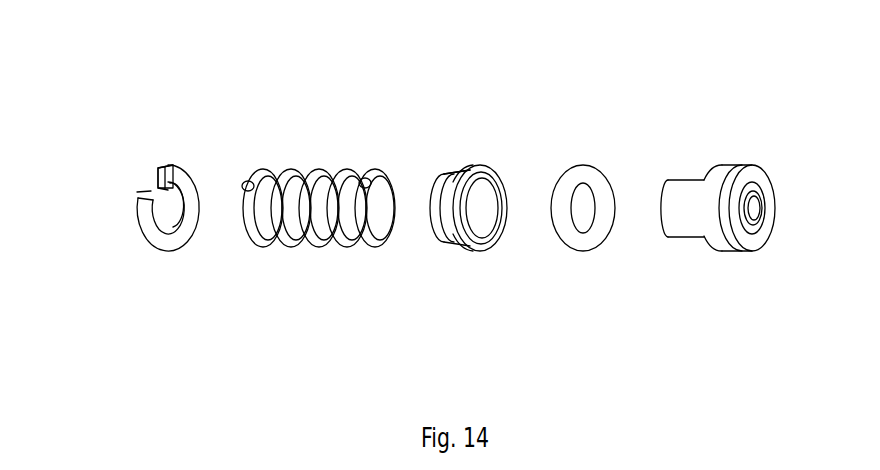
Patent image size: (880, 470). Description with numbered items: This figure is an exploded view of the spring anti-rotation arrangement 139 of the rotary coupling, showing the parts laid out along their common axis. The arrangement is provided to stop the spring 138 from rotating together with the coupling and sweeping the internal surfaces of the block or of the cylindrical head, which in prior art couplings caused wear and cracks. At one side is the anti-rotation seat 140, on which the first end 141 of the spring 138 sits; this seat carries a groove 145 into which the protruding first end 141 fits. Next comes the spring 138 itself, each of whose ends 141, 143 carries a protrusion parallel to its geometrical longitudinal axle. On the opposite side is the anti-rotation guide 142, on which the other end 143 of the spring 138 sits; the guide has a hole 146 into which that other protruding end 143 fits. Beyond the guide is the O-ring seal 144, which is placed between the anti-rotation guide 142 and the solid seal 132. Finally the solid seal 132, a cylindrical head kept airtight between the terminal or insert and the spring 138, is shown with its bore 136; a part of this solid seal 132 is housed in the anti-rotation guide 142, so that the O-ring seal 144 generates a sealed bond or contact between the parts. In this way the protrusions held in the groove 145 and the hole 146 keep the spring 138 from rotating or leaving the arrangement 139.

The solid seal 132 is at (700, 246).
The bore of pin 136 is at (760, 217).
The spring 138 is at (310, 252).
The anti-rotation arrangement 139 is at (387, 90).
The anti-rotation seat 140 is at (168, 256).
The first end of spring 141 is at (243, 183).
The anti-rotation guide 142 is at (473, 258).
The other end of spring 143 is at (367, 177).
The O-ring seal 144 is at (585, 256).
The groove 145 is at (148, 188).
The hole 146 is at (455, 178).